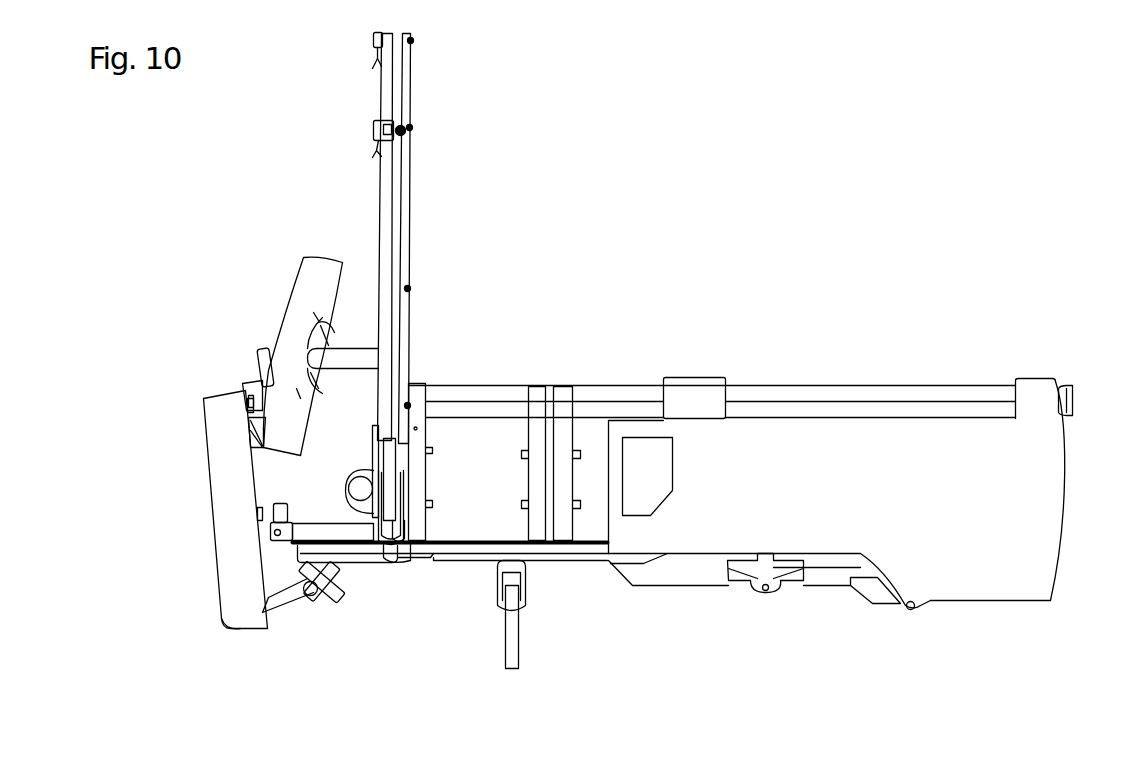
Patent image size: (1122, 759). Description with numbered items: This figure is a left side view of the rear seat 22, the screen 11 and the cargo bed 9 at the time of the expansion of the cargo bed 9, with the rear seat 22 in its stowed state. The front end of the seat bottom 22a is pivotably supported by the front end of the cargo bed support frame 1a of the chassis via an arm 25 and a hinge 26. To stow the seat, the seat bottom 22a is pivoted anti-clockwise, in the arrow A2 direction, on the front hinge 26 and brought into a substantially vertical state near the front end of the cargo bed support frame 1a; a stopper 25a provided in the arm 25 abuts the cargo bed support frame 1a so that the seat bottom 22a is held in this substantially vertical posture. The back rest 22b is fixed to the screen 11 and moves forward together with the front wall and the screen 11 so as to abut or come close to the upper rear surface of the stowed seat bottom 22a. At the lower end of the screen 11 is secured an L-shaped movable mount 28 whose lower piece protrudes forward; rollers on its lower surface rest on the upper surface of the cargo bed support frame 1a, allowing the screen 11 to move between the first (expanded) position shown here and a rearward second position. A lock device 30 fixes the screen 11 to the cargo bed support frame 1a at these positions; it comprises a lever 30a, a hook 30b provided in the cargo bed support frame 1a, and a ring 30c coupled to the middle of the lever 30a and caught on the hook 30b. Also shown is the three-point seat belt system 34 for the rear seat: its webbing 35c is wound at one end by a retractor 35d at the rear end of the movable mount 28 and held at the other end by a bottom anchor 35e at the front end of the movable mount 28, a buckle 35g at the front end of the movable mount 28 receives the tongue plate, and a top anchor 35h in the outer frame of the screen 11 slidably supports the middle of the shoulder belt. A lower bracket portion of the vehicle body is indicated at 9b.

The cargo bed 9 is at (782, 380).
The bracket 9b is at (807, 508).
The cargo bed support frame 1a is at (548, 553).
The screen 11 is at (402, 180).
The webbing 35c is at (377, 199).
The top anchor 35h is at (378, 44).
The three-point seat belt system 34 is at (342, 228).
The back rest 22b is at (310, 296).
The buckle 35g is at (253, 385).
The rear seat 22 is at (202, 430).
The arrow A2 direction A2 is at (225, 447).
The seat bottom 22a is at (227, 581).
The retractor 35d is at (362, 477).
The bottom anchor 35e is at (290, 512).
The movable mount 28 is at (350, 533).
The lock device 30 is at (392, 450).
The lever 30a is at (392, 492).
The ring 30c is at (405, 527).
The hook 30b is at (393, 558).
The arm 25 is at (283, 615).
The hinge 26 is at (315, 600).
The stopper 25a is at (343, 570).